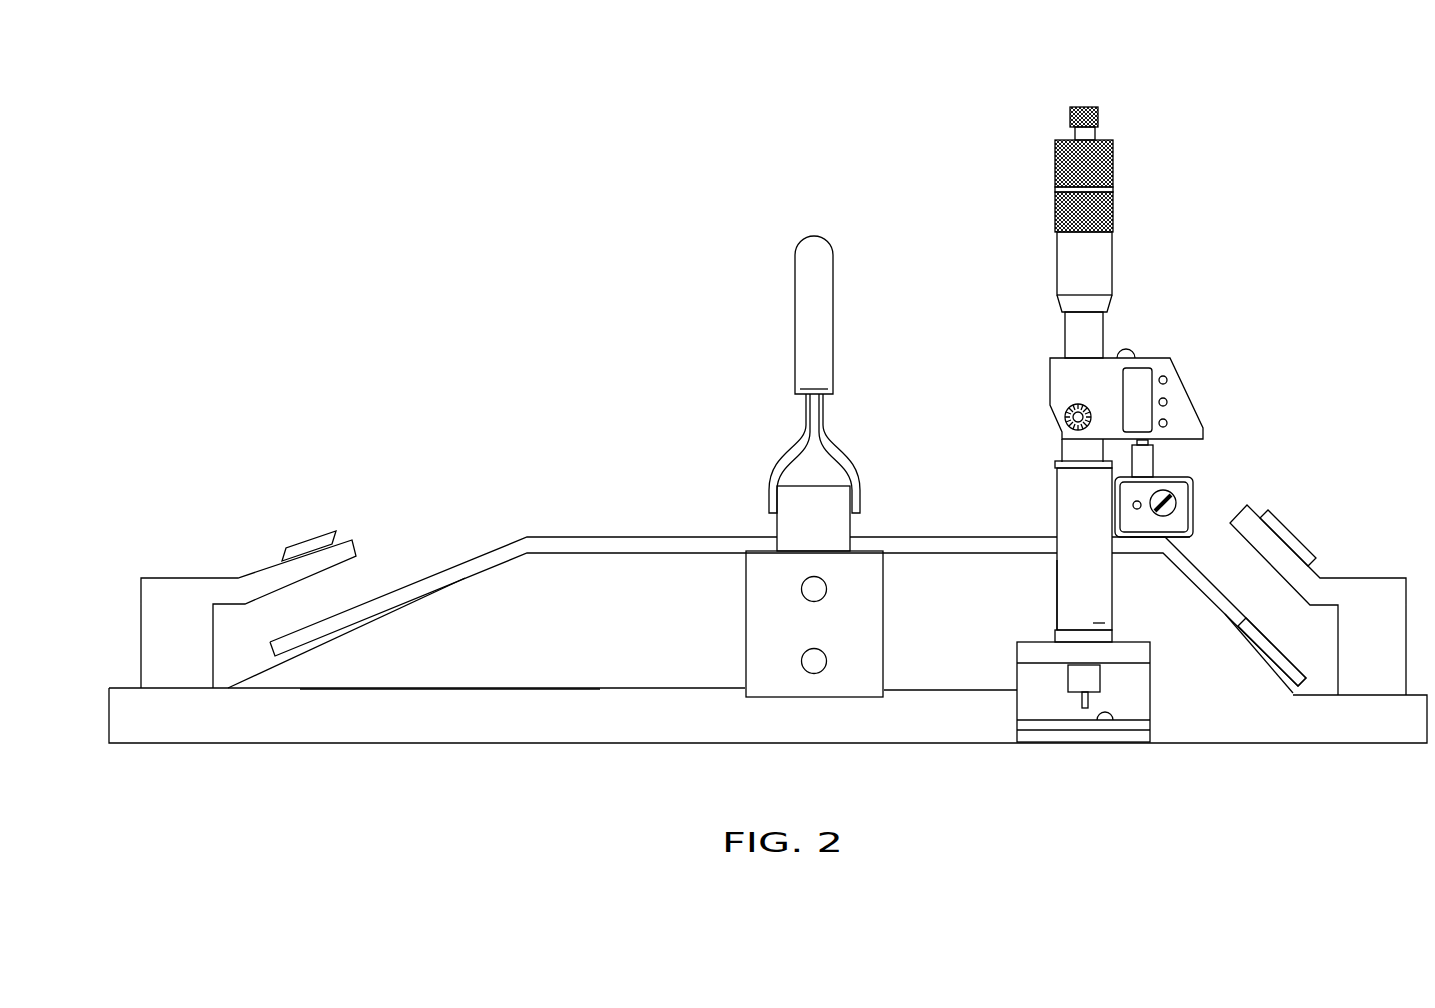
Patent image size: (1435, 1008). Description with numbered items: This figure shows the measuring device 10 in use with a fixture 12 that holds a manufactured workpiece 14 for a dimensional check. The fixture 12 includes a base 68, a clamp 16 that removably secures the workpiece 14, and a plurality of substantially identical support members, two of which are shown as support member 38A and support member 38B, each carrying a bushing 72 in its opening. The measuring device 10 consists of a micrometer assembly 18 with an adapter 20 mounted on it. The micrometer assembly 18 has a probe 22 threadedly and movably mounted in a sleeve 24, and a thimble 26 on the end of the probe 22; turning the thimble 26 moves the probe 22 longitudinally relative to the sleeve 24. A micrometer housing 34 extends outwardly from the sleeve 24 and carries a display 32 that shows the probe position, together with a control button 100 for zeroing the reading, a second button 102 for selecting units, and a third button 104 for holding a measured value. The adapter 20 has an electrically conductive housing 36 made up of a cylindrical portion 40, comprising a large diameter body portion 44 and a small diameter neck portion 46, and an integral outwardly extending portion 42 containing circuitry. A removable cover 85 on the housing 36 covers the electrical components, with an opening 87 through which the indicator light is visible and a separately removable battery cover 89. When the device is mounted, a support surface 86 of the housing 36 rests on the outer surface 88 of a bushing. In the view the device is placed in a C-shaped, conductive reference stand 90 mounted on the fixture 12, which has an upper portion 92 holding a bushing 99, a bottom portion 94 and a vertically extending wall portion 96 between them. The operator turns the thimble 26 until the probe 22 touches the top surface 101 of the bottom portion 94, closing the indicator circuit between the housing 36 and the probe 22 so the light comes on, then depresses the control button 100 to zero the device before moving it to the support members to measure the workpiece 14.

The measuring device 10 is at (1034, 137).
The fixture 12 is at (514, 716).
The workpiece 14 is at (580, 546).
The clamp 16 is at (848, 328).
The micrometer assembly 18 is at (1123, 187).
The adapter 20 is at (1035, 472).
The probe 22 is at (1092, 704).
The sleeve 24 is at (1074, 343).
The thimble 26 is at (1110, 243).
The display 32 is at (1138, 382).
The micrometer housing 34 is at (1196, 430).
The housing 36 is at (1195, 482).
The support member 38A is at (1382, 595).
The support member 38B is at (177, 597).
The cylindrical portion 40 is at (1058, 571).
The outwardly extending portion 42 is at (1205, 496).
The body portion 44 is at (1060, 600).
The neck portion 46 is at (1075, 684).
The base 68 is at (426, 718).
The bushing 72 is at (303, 540).
The removable cover 85 is at (1178, 522).
The support surface 86 is at (1060, 634).
The opening 87 is at (1133, 505).
The outer surface 88 is at (1095, 623).
The battery cover 89 is at (1178, 508).
The reference stand 90 is at (958, 716).
The upper portion 92 is at (1138, 651).
The bottom portion 94 is at (1030, 735).
The wall portion 96 is at (1033, 709).
The bushing 99 is at (1100, 637).
The control button 100 is at (1167, 423).
The top surface 101 is at (1107, 737).
The second button 102 is at (1167, 402).
The third button 104 is at (1166, 380).